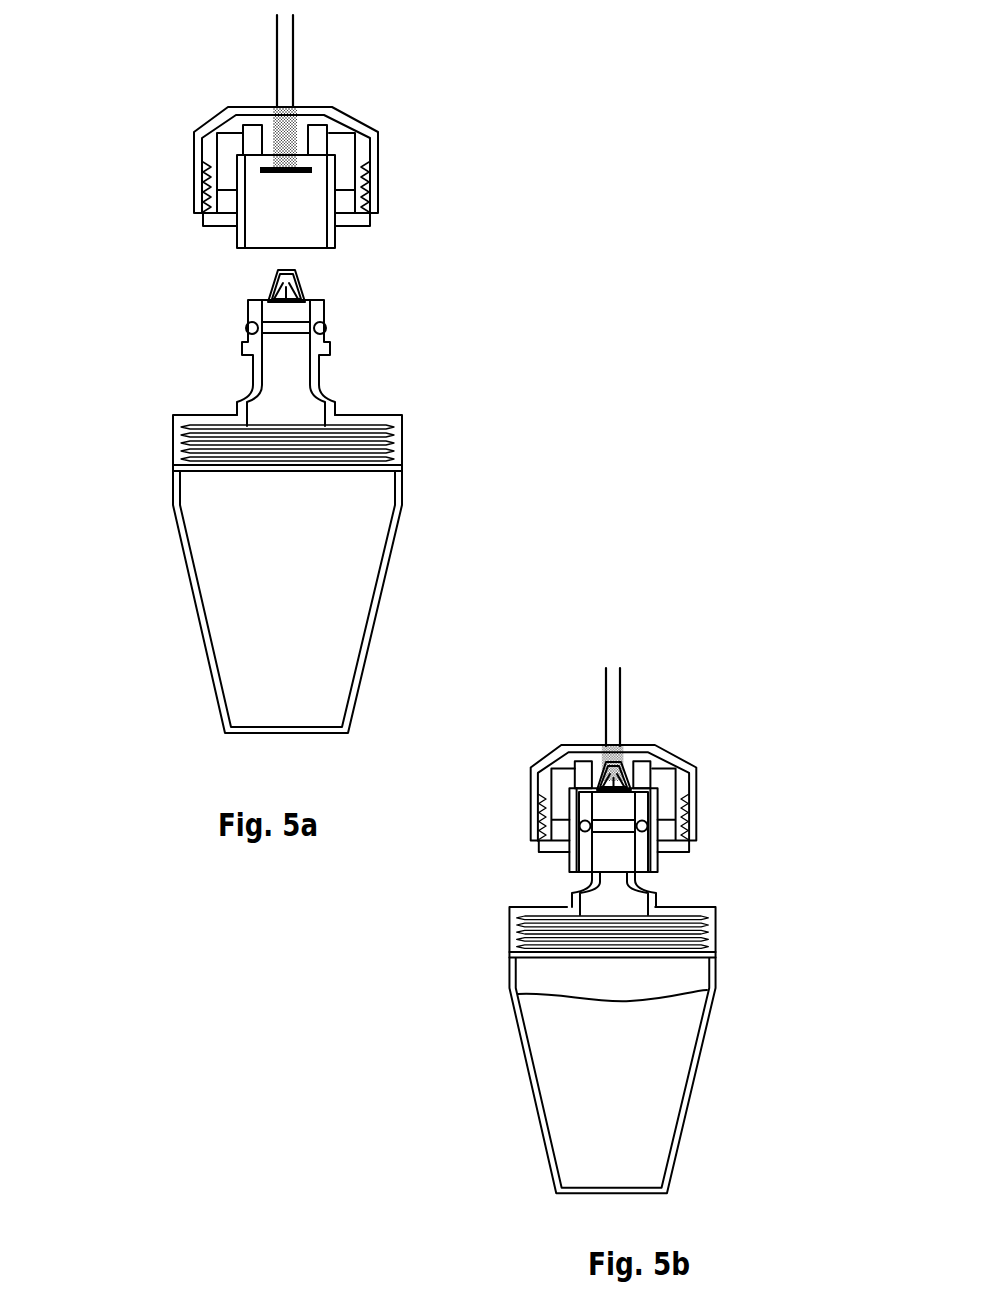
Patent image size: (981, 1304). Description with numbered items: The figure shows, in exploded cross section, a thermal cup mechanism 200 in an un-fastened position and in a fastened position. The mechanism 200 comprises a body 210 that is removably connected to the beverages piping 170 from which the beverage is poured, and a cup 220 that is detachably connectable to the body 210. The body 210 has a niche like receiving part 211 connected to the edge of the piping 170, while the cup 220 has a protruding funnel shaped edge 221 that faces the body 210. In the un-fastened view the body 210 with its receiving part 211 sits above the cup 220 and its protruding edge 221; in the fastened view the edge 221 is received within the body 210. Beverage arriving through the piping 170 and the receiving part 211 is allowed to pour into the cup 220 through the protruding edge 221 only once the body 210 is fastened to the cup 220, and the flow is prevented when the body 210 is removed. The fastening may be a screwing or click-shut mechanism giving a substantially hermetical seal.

In FIG. 5A, the beverages piping 170 is at (265, 69).
In FIG. 5B, the beverages piping 170 is at (636, 725).
In FIG. 5A, the thermal cup mechanism 200 is at (545, 195).
In FIG. 5B, the thermal cup mechanism 200 is at (418, 1078).
In FIG. 5A, the body 210 is at (160, 123).
In FIG. 5B, the body 210 is at (712, 747).
In FIG. 5A, the niche like receiving part 211 is at (287, 190).
In FIG. 5A, the cup 220 is at (125, 323).
In FIG. 5B, the cup 220 is at (723, 905).
In FIG. 5A, the protruding funnel shaped edge 221 is at (360, 320).
In FIG. 5B, the protruding funnel shaped edge 221 is at (614, 838).